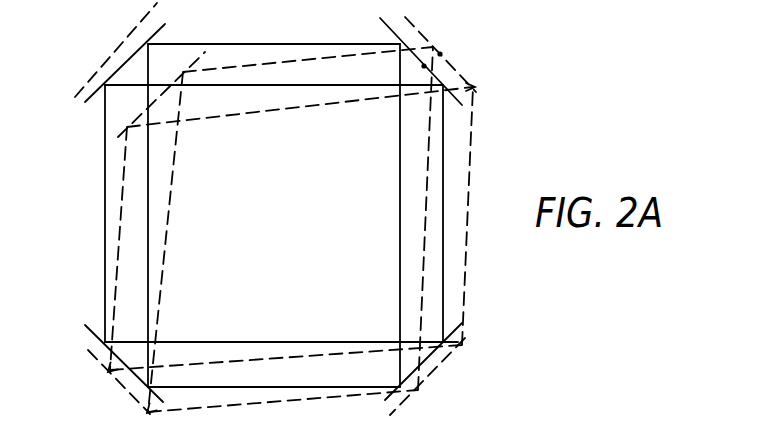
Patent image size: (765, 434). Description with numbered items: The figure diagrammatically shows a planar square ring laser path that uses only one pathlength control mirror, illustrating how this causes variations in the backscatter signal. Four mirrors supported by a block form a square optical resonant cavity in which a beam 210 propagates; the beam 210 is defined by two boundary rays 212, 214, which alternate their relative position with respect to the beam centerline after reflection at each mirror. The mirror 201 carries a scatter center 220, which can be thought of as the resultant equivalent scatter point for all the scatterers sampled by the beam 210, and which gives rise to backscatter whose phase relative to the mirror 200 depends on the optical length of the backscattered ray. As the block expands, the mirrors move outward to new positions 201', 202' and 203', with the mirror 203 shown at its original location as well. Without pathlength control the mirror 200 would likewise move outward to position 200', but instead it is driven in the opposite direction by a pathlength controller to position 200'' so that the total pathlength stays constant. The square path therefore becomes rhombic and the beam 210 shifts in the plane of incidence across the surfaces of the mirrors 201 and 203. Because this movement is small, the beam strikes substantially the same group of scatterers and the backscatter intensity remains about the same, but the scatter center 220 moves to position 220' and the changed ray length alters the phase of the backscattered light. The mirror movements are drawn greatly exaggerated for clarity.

The mirror 200 is at (116, 223).
The mirror position 200' is at (95, 50).
The PLC mirror position 200'' is at (124, 99).
The mirror 201 is at (412, 223).
The mirror position 201' is at (498, 216).
The mirror position 202' is at (458, 372).
The mirror 203 is at (246, 368).
The mirror position 203' is at (91, 377).
The beam 210 is at (112, 192).
The boundary ray 212 is at (148, 214).
The boundary ray 214 is at (106, 238).
The scatter center 220 is at (480, 74).
The scatter center position 220' is at (477, 48).